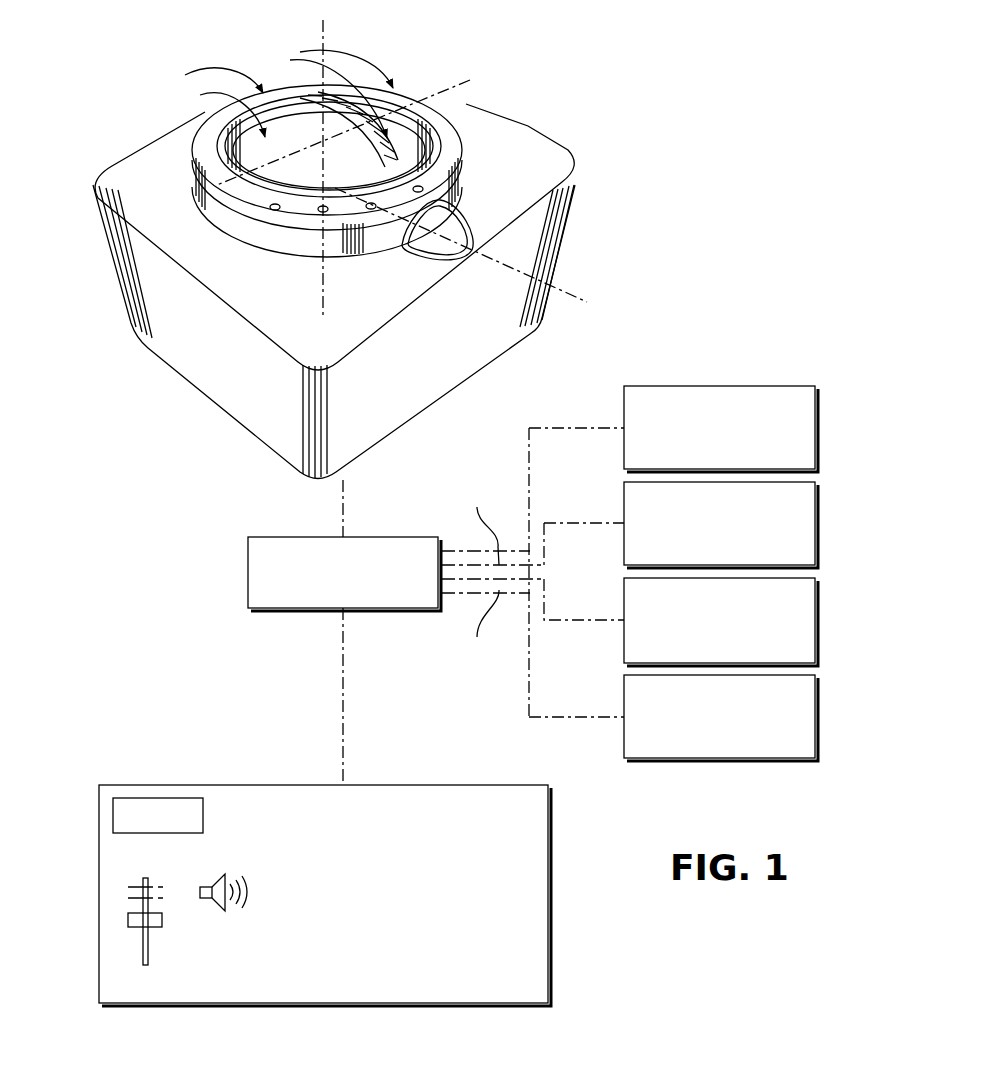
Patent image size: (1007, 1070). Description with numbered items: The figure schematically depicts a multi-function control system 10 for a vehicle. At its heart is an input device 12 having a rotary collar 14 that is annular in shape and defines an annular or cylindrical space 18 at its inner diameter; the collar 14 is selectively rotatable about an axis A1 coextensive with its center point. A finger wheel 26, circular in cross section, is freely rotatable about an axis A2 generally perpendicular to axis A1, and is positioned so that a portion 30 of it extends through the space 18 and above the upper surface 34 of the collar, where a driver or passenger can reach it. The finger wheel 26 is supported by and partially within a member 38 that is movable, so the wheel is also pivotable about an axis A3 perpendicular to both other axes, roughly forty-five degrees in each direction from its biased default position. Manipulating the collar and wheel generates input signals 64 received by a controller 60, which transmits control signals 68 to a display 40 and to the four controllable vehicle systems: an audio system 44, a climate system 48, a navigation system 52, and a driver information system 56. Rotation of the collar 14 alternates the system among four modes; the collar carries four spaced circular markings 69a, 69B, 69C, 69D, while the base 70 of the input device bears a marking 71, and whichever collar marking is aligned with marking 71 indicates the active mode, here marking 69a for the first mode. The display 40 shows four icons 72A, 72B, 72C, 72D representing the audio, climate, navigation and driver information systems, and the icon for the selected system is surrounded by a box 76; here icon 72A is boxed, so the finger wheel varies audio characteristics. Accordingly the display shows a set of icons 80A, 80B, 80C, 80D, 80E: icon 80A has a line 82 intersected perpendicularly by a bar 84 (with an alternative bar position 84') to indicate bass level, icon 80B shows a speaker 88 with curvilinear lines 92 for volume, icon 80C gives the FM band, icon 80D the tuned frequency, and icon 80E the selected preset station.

The multi-function control system 10 is at (122, 62).
The input device 12 is at (237, 68).
The rotary collar 14 is at (228, 222).
The annular or cylindrical space 18 is at (210, 143).
The finger wheel 26 is at (445, 110).
The portion of the finger wheel 30 is at (300, 52).
The upper surface of the rotary collar 34 is at (165, 163).
The member 38 is at (300, 180).
The display 40 is at (99, 850).
The audio system 44 is at (818, 428).
The climate system 48 is at (818, 519).
The navigation system 52 is at (818, 616).
The driver information system 56 is at (818, 713).
The controller 60 is at (248, 578).
The input signals 64 is at (343, 515).
The control signals 68 is at (343, 677).
The circular marking 69a is at (487, 175).
The circular marking 69B is at (371, 210).
The circular marking 69C is at (323, 212).
The circular marking 69D is at (275, 212).
The base of the input device 70 is at (537, 173).
The marking 71 is at (478, 210).
The icon 72A is at (157, 792).
The icon 72B is at (253, 792).
The icon 72C is at (371, 792).
The icon 72D is at (470, 792).
The box 76 is at (99, 812).
The icon 80A is at (138, 952).
The icon 80B is at (217, 948).
The icon 80C is at (425, 934).
The icon 80D is at (323, 934).
The icon 80E is at (495, 934).
The line 82 is at (148, 947).
The bar 84 is at (100, 939).
The alternate slider knob position 84' is at (98, 904).
The speaker 88 is at (204, 888).
The curvilinear lines 92 is at (250, 866).
The axis A1 is at (325, 46).
The axis A2 is at (455, 90).
The axis A3 is at (565, 290).